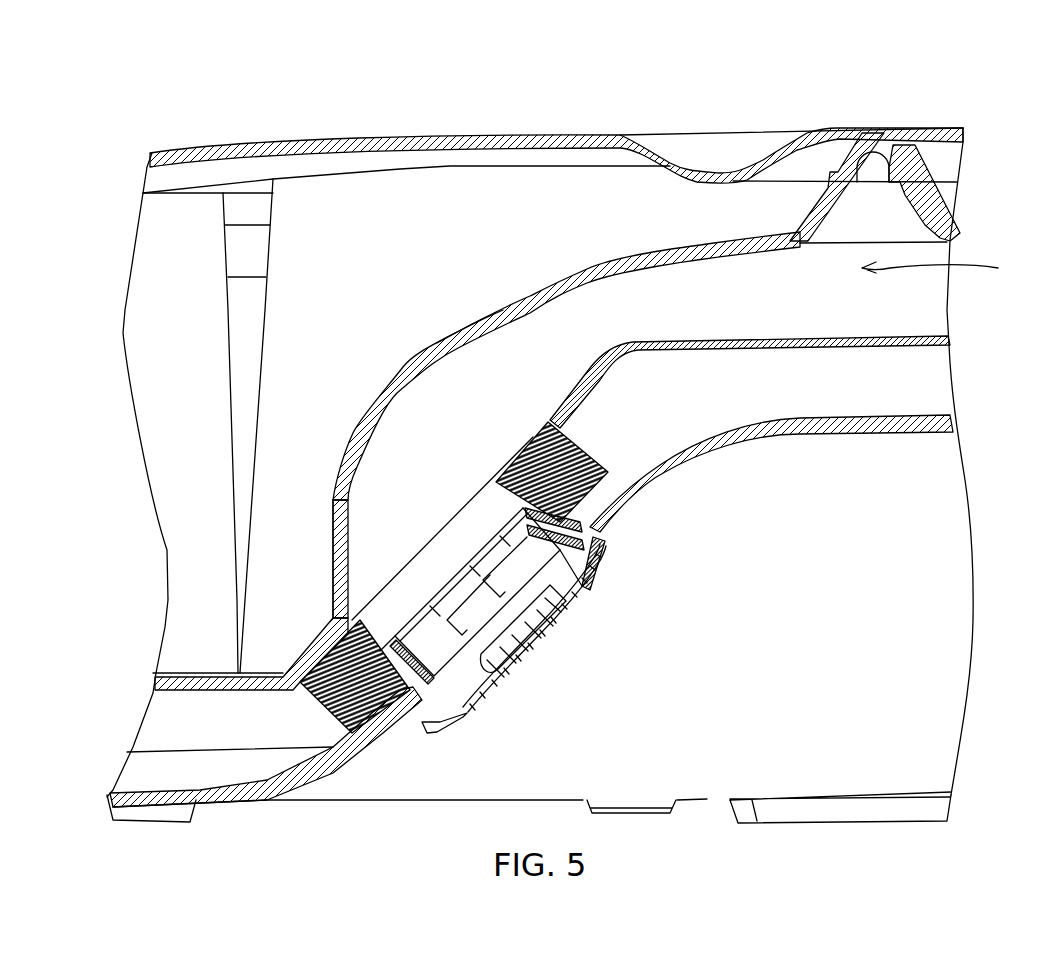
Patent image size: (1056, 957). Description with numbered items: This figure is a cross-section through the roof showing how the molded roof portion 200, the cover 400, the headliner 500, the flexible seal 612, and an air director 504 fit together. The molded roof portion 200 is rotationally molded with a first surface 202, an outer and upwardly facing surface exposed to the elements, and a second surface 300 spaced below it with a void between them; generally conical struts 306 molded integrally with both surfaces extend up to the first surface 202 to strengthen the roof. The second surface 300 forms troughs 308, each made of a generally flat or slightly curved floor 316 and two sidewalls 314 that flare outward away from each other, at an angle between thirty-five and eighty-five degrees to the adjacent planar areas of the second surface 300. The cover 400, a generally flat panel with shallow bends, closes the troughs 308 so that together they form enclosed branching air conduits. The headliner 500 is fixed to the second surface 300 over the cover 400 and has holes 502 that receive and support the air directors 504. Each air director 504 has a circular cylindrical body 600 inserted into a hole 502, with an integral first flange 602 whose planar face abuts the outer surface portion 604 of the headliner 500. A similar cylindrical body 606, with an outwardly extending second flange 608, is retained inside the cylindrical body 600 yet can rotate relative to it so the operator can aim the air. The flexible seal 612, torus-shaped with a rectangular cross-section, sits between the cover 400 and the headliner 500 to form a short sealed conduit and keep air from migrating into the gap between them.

The molded roof portion 200 is at (233, 109).
The first surface 202 is at (923, 128).
The conical struts 306 is at (812, 197).
The second surface 300 is at (700, 250).
The troughs 308 is at (950, 268).
The floor 316 is at (504, 325).
The sidewalls 314 is at (485, 388).
The cover 400 is at (910, 344).
The headliner 500 is at (753, 440).
The flexible seal 612 is at (590, 440).
The holes 502 is at (483, 693).
The cylindrical body 600 is at (523, 522).
The cylindrical body 606 is at (557, 560).
The outer surface portion 604 is at (590, 528).
The first flange 602 is at (590, 534).
The air directors 504 is at (600, 560).
The second flange 608 is at (597, 568).